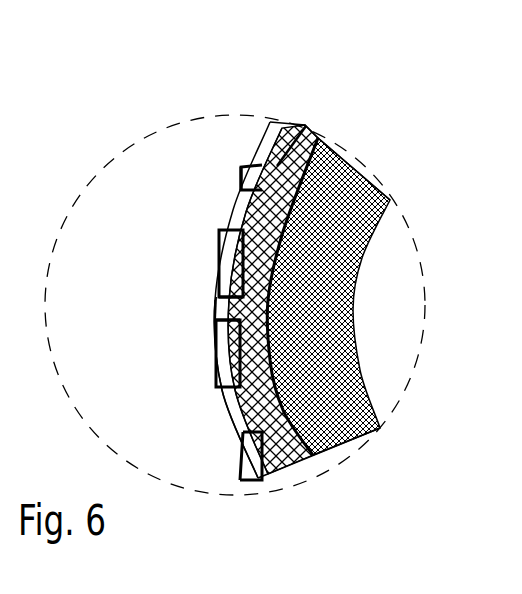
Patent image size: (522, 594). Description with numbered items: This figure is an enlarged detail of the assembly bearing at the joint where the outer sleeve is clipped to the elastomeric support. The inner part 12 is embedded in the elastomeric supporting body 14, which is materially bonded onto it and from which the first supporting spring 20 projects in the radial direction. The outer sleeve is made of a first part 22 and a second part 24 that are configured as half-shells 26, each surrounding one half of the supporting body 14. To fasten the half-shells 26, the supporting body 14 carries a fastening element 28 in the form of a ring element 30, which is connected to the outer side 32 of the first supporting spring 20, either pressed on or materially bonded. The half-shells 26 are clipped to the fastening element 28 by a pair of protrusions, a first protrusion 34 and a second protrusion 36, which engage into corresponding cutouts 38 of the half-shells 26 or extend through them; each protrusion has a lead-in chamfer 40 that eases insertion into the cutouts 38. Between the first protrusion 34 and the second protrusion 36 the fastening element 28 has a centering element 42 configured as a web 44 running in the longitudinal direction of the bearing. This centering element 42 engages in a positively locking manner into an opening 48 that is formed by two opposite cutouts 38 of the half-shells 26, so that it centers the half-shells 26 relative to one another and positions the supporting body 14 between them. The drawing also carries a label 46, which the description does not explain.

The inner part 12 is at (0, 284).
The elastomeric supporting body 14 is at (360, 187).
The first supporting spring 20 is at (343, 150).
The first part 22 is at (280, 122).
The second part 24 is at (258, 462).
The half-shells 26 is at (289, 122).
The fastening element 28 is at (306, 134).
The ring element 30 is at (250, 128).
The outer side 32 is at (232, 152).
The first protrusion 34 is at (224, 226).
The second protrusion 36 is at (236, 385).
The cutouts 38 is at (245, 148).
The lead-in chamfer 40 is at (241, 210).
The centering element 42 is at (217, 309).
The web 44 is at (216, 320).
The clip 46 is at (217, 283).
The opening 48 is at (215, 325).